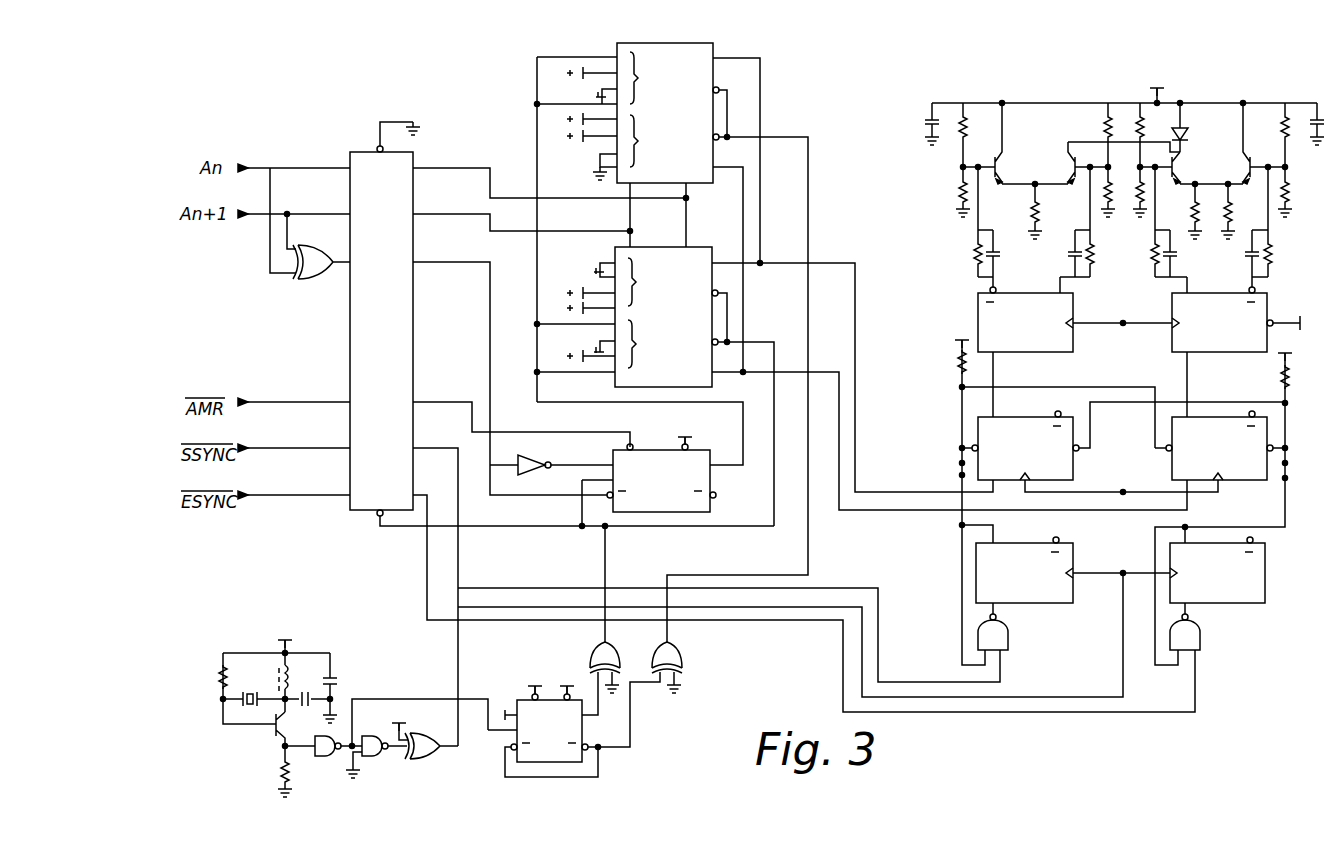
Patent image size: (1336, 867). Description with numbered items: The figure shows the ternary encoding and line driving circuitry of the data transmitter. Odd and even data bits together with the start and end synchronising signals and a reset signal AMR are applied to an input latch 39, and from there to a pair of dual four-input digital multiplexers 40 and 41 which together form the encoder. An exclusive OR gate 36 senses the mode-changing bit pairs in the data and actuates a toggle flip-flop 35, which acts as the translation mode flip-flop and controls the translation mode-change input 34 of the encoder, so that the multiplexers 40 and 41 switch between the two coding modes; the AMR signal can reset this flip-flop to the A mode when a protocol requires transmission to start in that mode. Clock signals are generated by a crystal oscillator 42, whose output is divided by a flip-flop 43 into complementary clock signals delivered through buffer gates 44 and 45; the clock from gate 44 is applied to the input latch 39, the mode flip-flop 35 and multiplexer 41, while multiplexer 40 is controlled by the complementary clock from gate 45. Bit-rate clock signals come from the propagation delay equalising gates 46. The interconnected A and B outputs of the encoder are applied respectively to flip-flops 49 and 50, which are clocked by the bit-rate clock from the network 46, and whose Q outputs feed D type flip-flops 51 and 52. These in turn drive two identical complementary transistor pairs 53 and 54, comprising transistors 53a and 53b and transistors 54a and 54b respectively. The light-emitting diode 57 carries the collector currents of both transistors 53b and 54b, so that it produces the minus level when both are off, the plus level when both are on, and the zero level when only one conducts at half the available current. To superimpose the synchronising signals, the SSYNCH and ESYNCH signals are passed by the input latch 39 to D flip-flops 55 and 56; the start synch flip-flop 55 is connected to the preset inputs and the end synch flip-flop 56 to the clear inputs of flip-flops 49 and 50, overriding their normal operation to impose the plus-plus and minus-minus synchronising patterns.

The translation mode-change input 34 is at (655, 403).
The toggle flip-flop 35 is at (661, 474).
The exclusive OR gate 36 is at (331, 274).
The input latch 39 is at (312, 347).
The digital multiplexer 40 is at (714, 46).
The digital multiplexer 41 is at (662, 333).
The crystal oscillator 42 is at (240, 650).
The flip-flop 43 is at (512, 740).
The buffer gate 44 is at (614, 658).
The buffer gate 45 is at (681, 658).
The propagation delay equalising gates 46 is at (404, 783).
The flip-flop 49 is at (1032, 459).
The flip-flop 50 is at (1225, 459).
The D type flip-flop 51 is at (1032, 335).
The D type flip-flop 52 is at (1227, 335).
The complementary transistor pair 53 is at (1052, 185).
The transistor 53a is at (1035, 170).
The transistor 53b is at (1109, 136).
The complementary transistor pair 54 is at (1228, 185).
The transistor 54a is at (1270, 166).
The transistor 54b is at (1210, 94).
The start synch flip-flop 55 is at (1032, 585).
The end synch flip-flop 56 is at (1225, 585).
The light-emitting diode 57 is at (1186, 137).